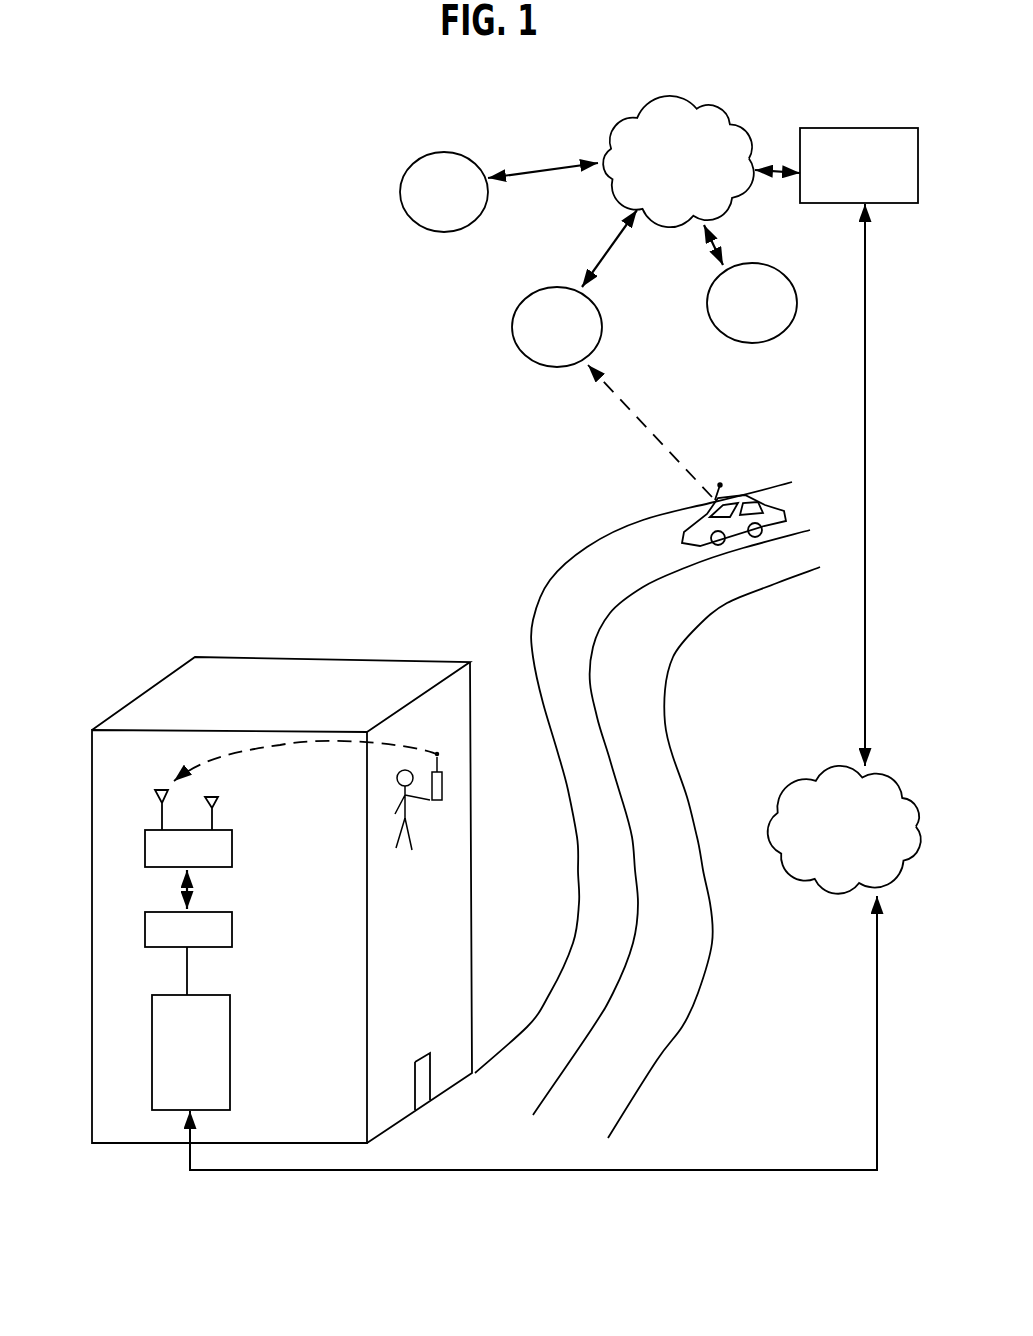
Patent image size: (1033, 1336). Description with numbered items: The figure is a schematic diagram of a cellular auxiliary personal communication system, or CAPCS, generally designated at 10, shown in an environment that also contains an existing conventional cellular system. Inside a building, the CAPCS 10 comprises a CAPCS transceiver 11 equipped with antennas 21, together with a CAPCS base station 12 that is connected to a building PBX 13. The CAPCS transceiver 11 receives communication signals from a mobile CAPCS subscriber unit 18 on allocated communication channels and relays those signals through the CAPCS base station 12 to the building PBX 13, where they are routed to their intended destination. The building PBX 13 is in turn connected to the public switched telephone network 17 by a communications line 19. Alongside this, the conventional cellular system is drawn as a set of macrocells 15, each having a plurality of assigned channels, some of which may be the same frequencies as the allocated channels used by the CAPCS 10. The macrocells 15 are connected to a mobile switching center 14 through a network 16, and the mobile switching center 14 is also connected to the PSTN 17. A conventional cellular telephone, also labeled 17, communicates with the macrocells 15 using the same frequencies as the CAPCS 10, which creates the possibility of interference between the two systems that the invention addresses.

The cellular auxiliary personal communication system 10 is at (115, 910).
The CAPCS transceiver 11 is at (145, 856).
The CAPCS base station 12 is at (153, 948).
The building PBX 13 is at (152, 1068).
The mobile switching center 14 is at (840, 128).
The macrocell 15 is at (436, 152).
The network 16 is at (694, 125).
The public switched telephone network 17 is at (720, 498).
The mobile CAPCS subscriber unit 18 is at (442, 789).
The communications line 19 is at (742, 1170).
The antenna 21 is at (160, 802).